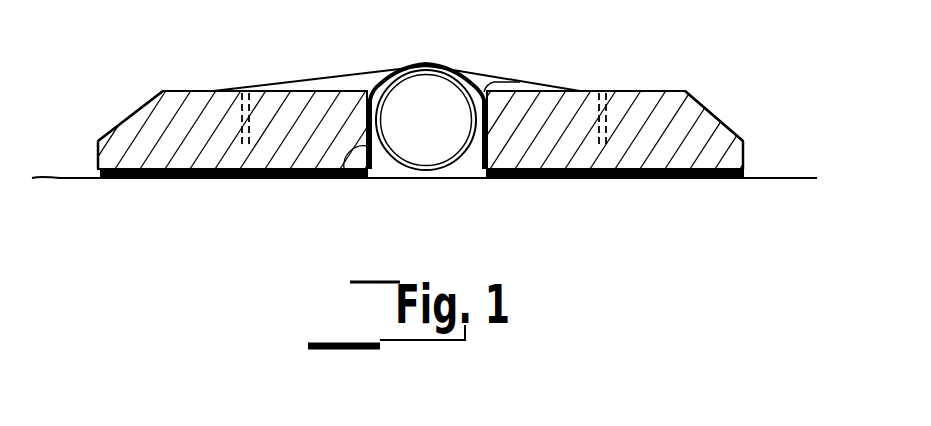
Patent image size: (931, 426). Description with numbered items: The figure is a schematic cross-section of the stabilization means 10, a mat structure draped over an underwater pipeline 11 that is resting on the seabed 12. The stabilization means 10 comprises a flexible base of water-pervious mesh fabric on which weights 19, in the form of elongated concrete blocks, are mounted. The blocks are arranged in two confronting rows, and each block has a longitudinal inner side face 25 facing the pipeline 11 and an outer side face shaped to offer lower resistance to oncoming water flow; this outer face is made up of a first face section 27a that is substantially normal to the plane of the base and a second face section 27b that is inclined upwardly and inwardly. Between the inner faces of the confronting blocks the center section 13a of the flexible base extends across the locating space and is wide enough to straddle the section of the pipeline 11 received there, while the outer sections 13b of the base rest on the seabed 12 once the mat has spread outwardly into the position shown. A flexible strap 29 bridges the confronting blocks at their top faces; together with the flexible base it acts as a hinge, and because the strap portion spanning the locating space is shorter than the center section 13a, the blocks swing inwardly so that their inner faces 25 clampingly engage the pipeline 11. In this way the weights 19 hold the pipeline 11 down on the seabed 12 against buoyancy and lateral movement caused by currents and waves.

The stabilization means 10 is at (376, 85).
The underwater pipeline 11 is at (388, 168).
The ground surface 12 is at (800, 177).
The center section of flexible base 13a is at (478, 88).
The sections of the base 13b is at (230, 181).
The weights 19 is at (228, 91).
The longitudinal inner side face 25 is at (488, 82).
The first face section 27a is at (97, 157).
The second face section 27b is at (138, 108).
The flexible strap 29 is at (545, 84).